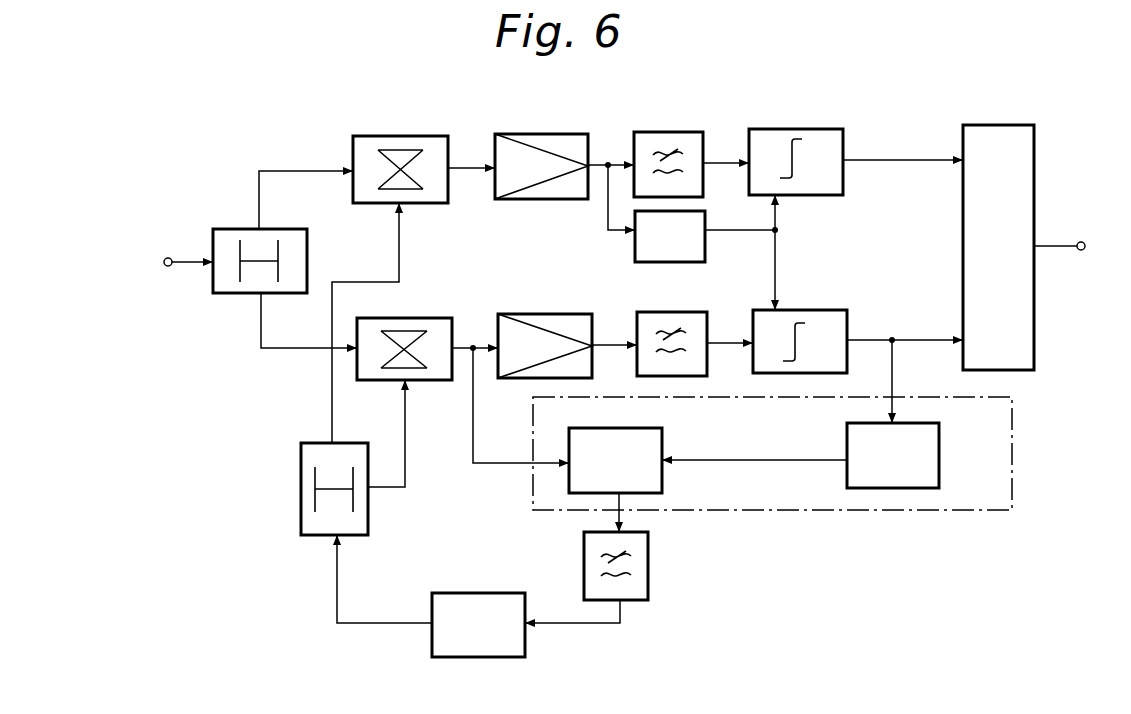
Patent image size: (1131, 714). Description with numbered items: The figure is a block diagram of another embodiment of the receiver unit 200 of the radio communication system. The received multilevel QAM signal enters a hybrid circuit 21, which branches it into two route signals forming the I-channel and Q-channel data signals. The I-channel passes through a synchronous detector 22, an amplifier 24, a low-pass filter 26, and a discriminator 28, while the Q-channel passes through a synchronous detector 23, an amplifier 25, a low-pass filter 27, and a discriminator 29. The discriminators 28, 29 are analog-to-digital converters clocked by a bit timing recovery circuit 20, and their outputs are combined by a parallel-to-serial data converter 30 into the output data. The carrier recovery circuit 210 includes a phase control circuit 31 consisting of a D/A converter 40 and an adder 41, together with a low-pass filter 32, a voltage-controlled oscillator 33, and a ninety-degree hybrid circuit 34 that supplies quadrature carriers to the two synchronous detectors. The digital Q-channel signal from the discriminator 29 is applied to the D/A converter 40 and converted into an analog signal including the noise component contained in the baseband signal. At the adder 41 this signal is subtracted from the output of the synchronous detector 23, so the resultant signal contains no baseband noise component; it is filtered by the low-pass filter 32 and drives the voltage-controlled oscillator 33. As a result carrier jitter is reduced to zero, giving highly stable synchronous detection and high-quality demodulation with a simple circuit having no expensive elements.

The receiver unit 200 is at (270, 102).
The carrier recovery circuit 210 is at (234, 420).
The hybrid circuit 21 is at (232, 229).
The synchronous detector 22 is at (423, 135).
The synchronous detector 23 is at (432, 317).
The amplifier 24 is at (566, 133).
The amplifier 25 is at (566, 313).
The low-pass filter 26 is at (683, 131).
The low-pass filter 27 is at (683, 311).
The discriminator 28 is at (820, 128).
The discriminator 29 is at (829, 309).
The parallel-to-serial data converter 30 is at (1011, 124).
The bit timing recovery circuit 20 is at (705, 214).
The phase control circuit 31 is at (1012, 464).
The low-pass filter 32 is at (648, 566).
The voltage-controlled oscillator 33 is at (480, 593).
The π/2 hybrid circuit 34 is at (301, 508).
The D/A converter 40 is at (939, 458).
The adder 41 is at (662, 431).